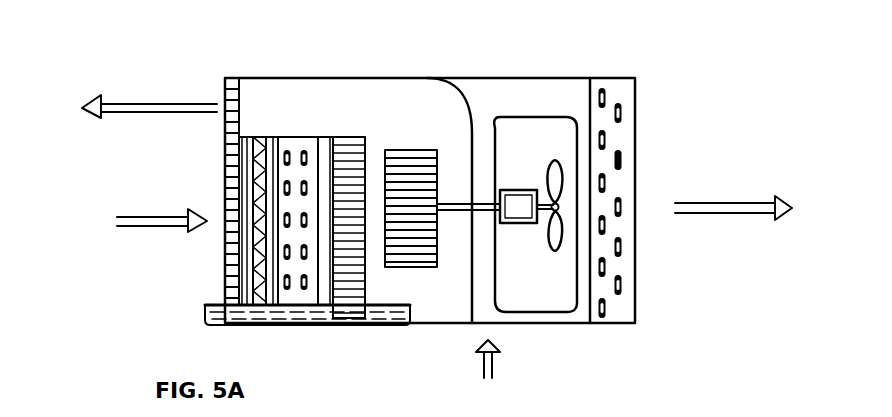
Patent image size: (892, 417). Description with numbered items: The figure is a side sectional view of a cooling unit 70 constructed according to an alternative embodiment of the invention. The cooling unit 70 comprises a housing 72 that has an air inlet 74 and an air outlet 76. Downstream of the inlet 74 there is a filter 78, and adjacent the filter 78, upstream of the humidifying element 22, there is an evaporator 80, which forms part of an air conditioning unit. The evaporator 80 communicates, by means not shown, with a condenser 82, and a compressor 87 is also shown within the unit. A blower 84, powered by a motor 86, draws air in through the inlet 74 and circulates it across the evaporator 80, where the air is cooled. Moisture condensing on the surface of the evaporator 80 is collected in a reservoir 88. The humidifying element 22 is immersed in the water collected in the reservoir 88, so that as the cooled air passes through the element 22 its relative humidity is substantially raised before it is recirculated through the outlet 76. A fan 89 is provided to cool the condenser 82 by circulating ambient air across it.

The cooling unit 70 is at (466, 46).
The housing 72 is at (427, 78).
The air inlet 74 is at (228, 186).
The air outlet 76 is at (228, 90).
The filter 78 is at (258, 137).
The evaporator 80 is at (297, 137).
The humidifying element 22 is at (354, 137).
The condenser 82 is at (621, 160).
The blower 84 is at (420, 267).
The motor 86 is at (520, 192).
The compressor 87 is at (560, 313).
The reservoir 88 is at (205, 312).
The fan 89 is at (556, 250).